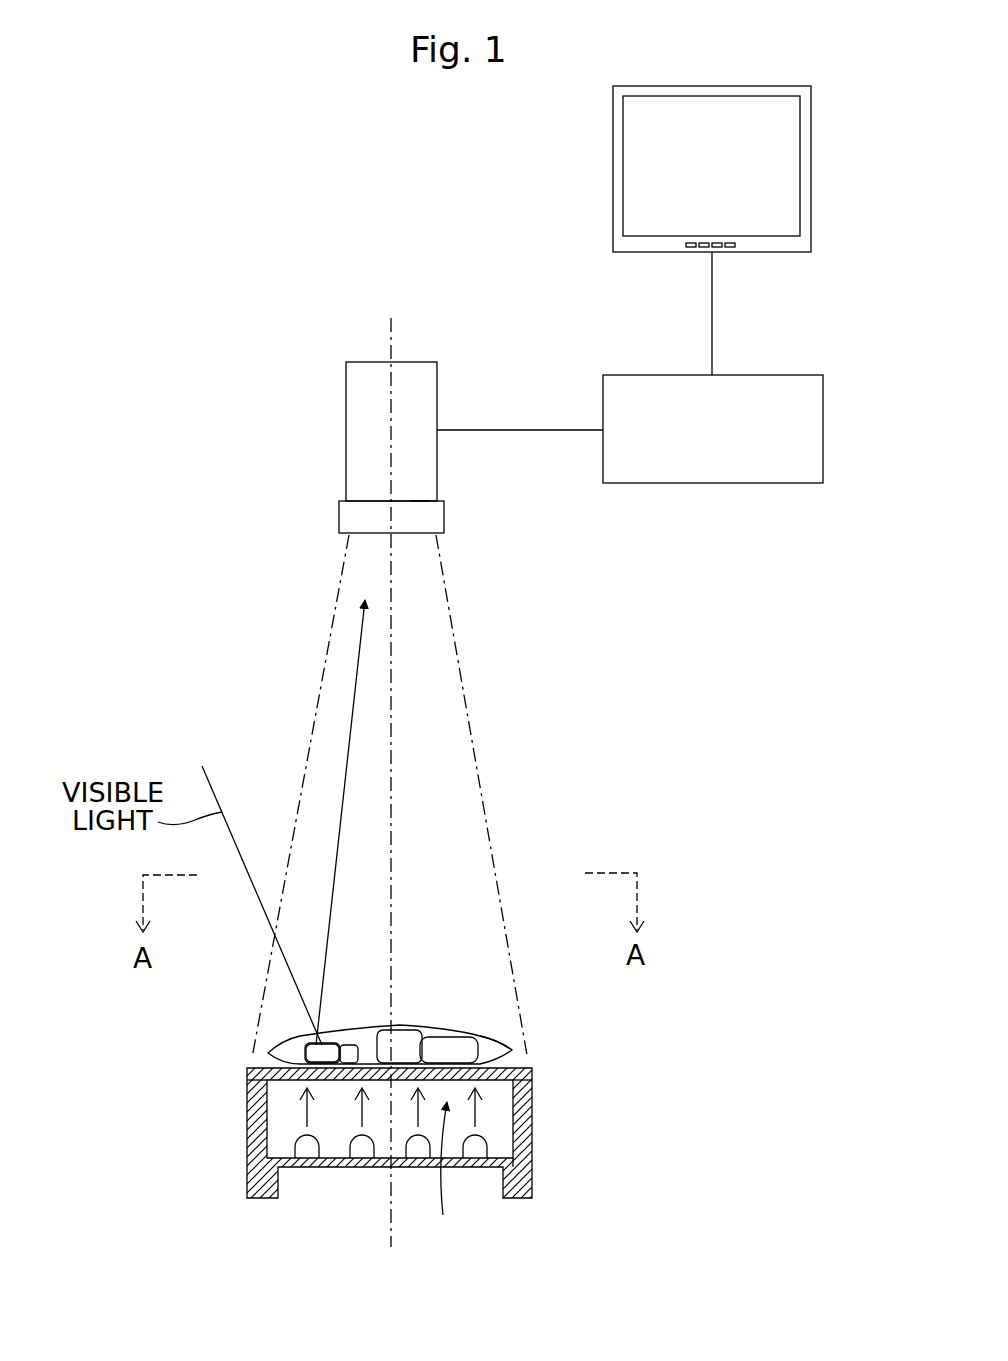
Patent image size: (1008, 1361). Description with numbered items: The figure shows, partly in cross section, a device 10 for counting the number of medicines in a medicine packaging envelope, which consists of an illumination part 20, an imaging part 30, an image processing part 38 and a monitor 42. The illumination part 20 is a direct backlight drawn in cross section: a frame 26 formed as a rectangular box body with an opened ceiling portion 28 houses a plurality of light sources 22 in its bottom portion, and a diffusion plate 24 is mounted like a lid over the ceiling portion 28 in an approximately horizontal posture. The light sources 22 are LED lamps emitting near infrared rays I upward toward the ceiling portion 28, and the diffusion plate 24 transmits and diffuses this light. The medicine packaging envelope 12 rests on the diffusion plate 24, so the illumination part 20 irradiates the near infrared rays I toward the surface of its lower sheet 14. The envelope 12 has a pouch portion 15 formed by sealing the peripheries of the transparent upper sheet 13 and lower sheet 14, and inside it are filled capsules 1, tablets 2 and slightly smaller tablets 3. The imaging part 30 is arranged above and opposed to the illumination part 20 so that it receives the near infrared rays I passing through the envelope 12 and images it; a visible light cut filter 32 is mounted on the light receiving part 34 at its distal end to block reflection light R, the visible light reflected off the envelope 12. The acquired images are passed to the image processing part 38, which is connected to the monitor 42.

The device for counting the number of medicines in a medicine packaging envelope 10 is at (210, 288).
The monitor 42 is at (613, 190).
The image processing part 38 is at (823, 418).
The imaging part 30 is at (346, 421).
The visible light cut filter 32 is at (339, 514).
The light receiving part 34 is at (417, 500).
The reflection light R is at (353, 690).
The medicine packaging envelope 12 is at (122, 1015).
The upper sheet 13 is at (302, 1043).
The lower sheet 14 is at (268, 1053).
The pouch portion 15 is at (495, 1042).
The capsules 1 is at (443, 1040).
The tablets 2 is at (403, 1032).
The tablets 3 is at (338, 1043).
The illumination part 20 is at (415, 1143).
The diffusion plate 24 is at (517, 1067).
The frame 26 is at (533, 1107).
The light sources 22 is at (296, 1149).
The near infrared rays I is at (302, 1108).
The ceiling portion 28 is at (444, 1175).